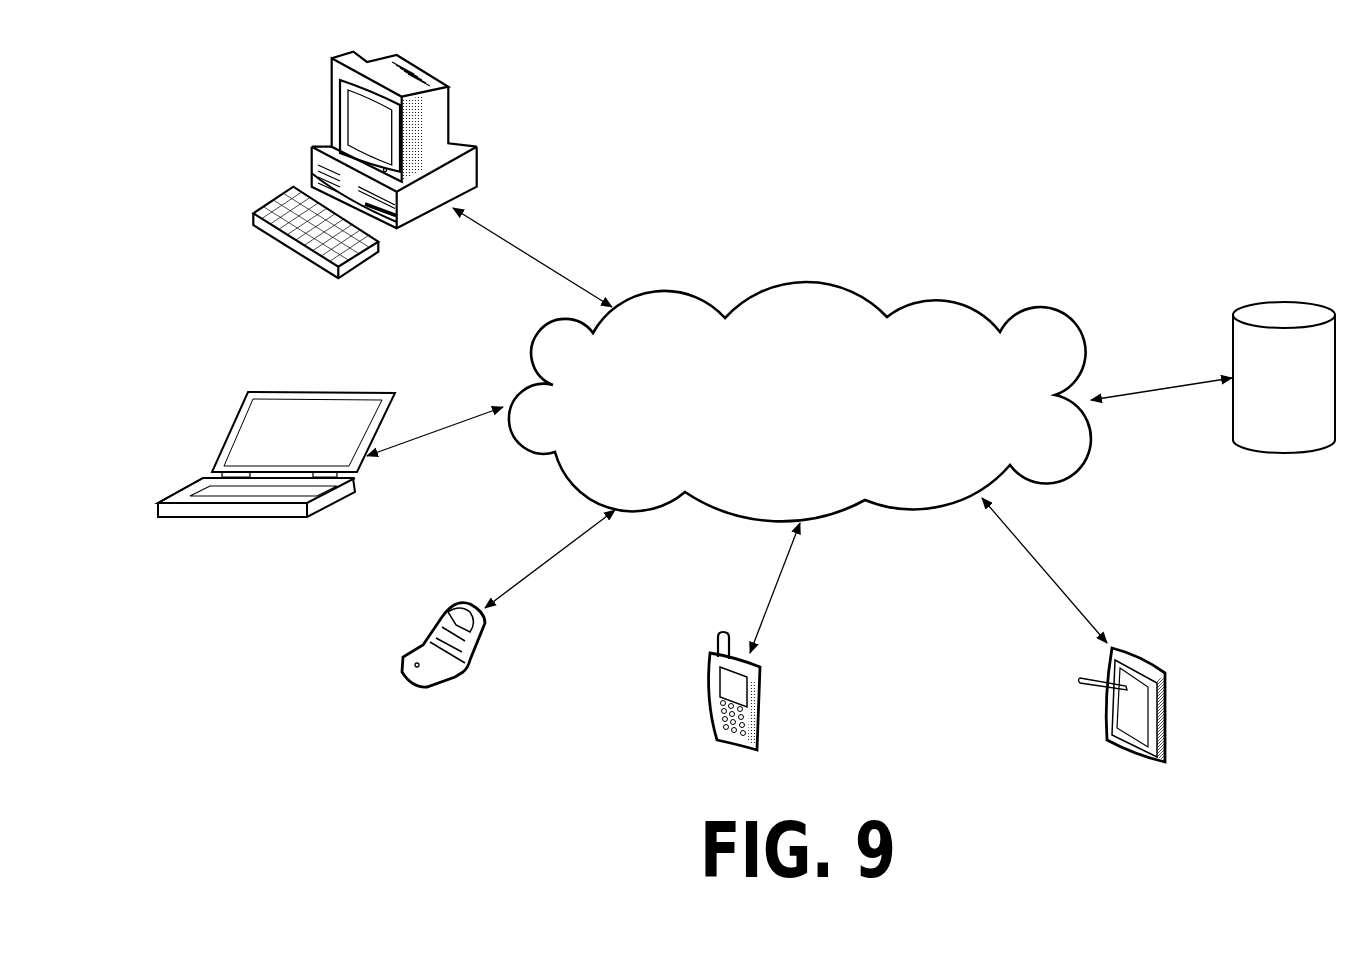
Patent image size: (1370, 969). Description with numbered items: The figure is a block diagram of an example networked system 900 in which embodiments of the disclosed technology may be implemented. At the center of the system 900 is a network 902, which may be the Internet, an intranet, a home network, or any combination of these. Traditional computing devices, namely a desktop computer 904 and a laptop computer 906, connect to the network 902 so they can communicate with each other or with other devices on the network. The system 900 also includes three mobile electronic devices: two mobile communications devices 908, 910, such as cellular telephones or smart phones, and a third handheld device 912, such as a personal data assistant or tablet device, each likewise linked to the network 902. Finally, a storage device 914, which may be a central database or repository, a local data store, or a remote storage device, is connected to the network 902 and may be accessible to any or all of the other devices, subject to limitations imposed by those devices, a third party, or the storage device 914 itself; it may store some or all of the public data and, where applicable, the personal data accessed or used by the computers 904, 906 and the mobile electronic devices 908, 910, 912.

The networked system 900 is at (1093, 112).
The network 902 is at (772, 465).
The desktop computer 904 is at (432, 179).
The laptop computer 906 is at (330, 454).
The mobile electronic device 908 is at (496, 598).
The mobile electronic device 910 is at (734, 636).
The mobile electronic device 912 is at (1083, 630).
The storage device 914 is at (1264, 394).